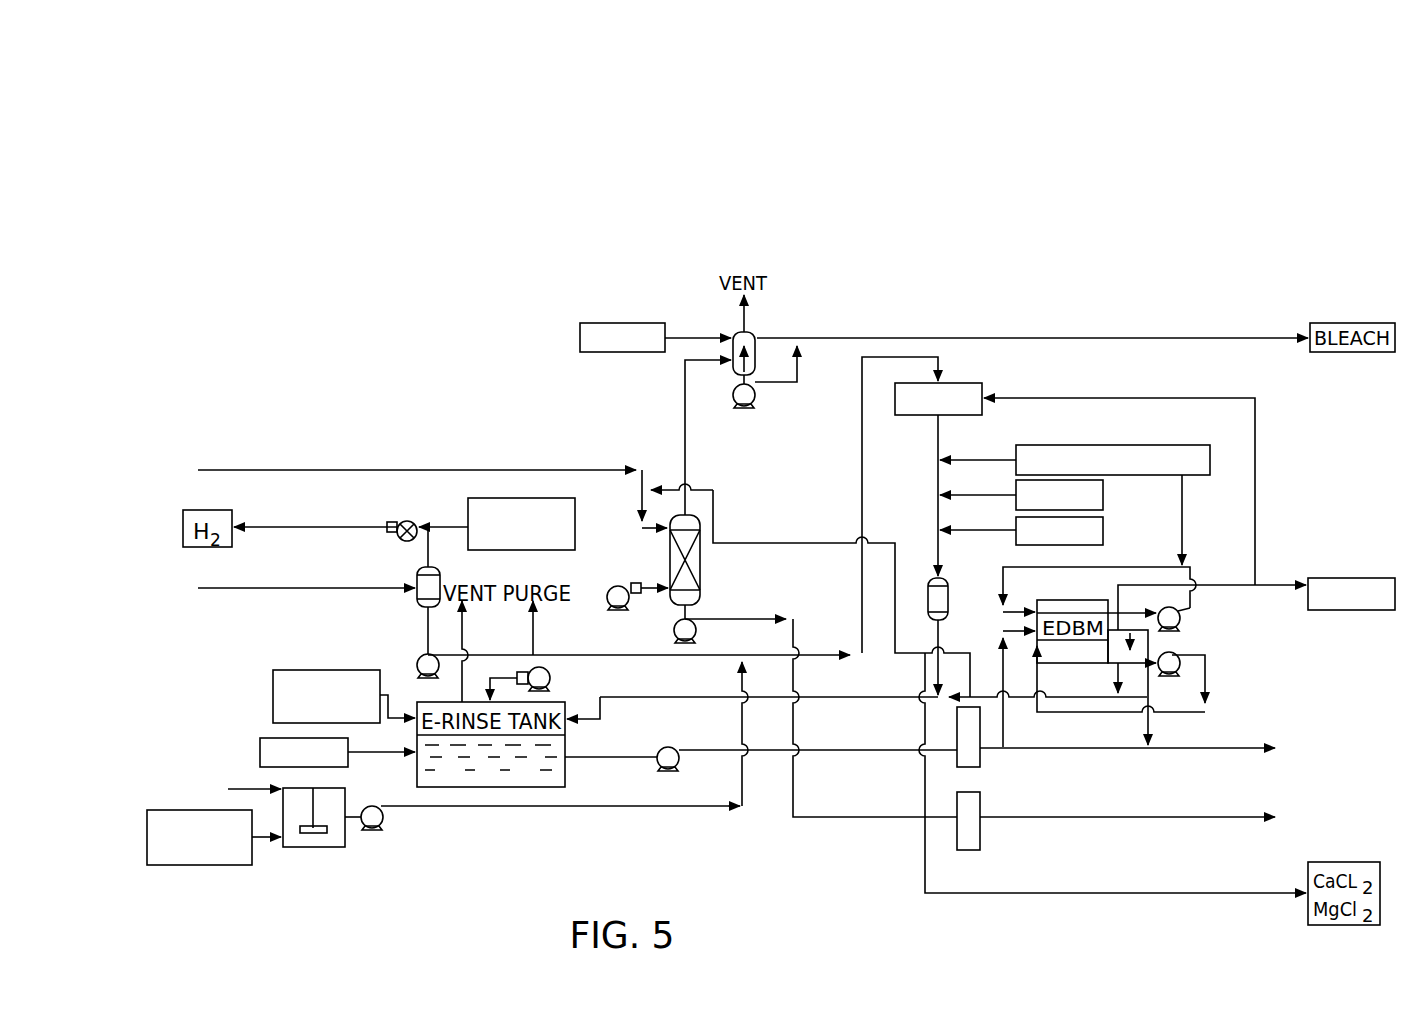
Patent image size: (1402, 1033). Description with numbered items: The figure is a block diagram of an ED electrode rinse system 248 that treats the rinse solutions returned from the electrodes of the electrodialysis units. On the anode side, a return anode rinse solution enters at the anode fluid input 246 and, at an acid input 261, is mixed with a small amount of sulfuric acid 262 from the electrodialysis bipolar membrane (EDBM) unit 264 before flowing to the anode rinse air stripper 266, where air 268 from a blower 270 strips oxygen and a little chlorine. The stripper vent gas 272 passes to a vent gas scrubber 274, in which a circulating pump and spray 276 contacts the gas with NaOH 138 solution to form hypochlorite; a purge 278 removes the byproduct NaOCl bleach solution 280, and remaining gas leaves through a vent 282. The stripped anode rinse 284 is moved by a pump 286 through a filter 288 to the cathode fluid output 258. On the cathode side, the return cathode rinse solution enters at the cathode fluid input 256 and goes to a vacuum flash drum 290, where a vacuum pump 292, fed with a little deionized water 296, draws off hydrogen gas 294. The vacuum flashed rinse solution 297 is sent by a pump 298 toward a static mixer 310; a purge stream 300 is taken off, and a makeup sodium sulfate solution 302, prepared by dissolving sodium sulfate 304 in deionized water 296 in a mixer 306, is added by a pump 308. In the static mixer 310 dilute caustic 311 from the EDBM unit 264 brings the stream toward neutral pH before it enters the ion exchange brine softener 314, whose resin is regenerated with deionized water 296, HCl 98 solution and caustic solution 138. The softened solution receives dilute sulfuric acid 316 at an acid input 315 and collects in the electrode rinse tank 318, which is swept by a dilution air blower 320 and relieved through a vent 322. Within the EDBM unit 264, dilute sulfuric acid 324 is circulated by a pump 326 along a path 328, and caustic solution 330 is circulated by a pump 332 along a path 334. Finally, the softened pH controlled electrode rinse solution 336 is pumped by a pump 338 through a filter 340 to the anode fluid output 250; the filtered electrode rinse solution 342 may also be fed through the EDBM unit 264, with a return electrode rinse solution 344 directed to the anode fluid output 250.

The HCl solution 98 is at (1105, 530).
The NaOH solution 138 is at (580, 340).
The anode fluid input 246 is at (307, 468).
The ED electrode rinse system 248 is at (262, 340).
The anode fluid output 250 is at (1178, 749).
The cathode fluid input 256 is at (250, 588).
The cathode fluid output 258 is at (1125, 818).
The acid input 261 is at (640, 505).
The sulfuric acid 262 is at (808, 542).
The electrodialysis bipolar membrane (EDBM) unit 264 is at (1055, 599).
The anode rinse air stripper 266 is at (700, 560).
The air 268 is at (648, 590).
The blower 270 is at (615, 586).
The stripper vent gas 272 is at (690, 493).
The vent gas scrubber 274 is at (754, 333).
The circulating pump and spray 276 is at (756, 404).
The purge 278 is at (900, 337).
The NaOCl bleach solution 280 is at (1352, 322).
The vent 282 is at (740, 322).
The stripped anode rinse 284 is at (700, 612).
The pump 286 is at (697, 630).
The filter 288 is at (980, 835).
The vacuum flash drum 290 is at (417, 600).
The vacuum pump 292 is at (401, 524).
The hydrogen gas 294 is at (207, 509).
The deionized water 296 is at (518, 497).
The vacuum flashed rinse solution 297 is at (428, 632).
The pump 298 is at (418, 664).
The purge stream 300 is at (535, 638).
The makeup sodium sulfate solution 302 is at (744, 800).
The sodium sulfate 304 is at (258, 788).
The mixer 306 is at (313, 848).
The pump 308 is at (381, 832).
The static mixer 310 is at (962, 383).
The dilute caustic 311 is at (1112, 398).
The ion exchange brine softener 314 is at (947, 612).
The acid input 315 is at (925, 707).
The dilute sulfuric acid 316 is at (993, 700).
The electrode rinse tank 318 is at (566, 737).
The dilution air blower 320 is at (550, 677).
The vent 322 is at (464, 625).
The dilute sulfuric acid 324 is at (1150, 657).
The pump 326 is at (1181, 670).
The path 328 is at (1207, 722).
The caustic solution 330 is at (1150, 610).
The pump 332 is at (1182, 618).
The path 334 is at (1108, 566).
The softened pH controlled electrode rinse solution 336 is at (633, 758).
The pump 338 is at (676, 771).
The filter 340 is at (980, 765).
The filtered electrode rinse solution 342 is at (998, 670).
The return electrode rinse solution 344 is at (1146, 720).